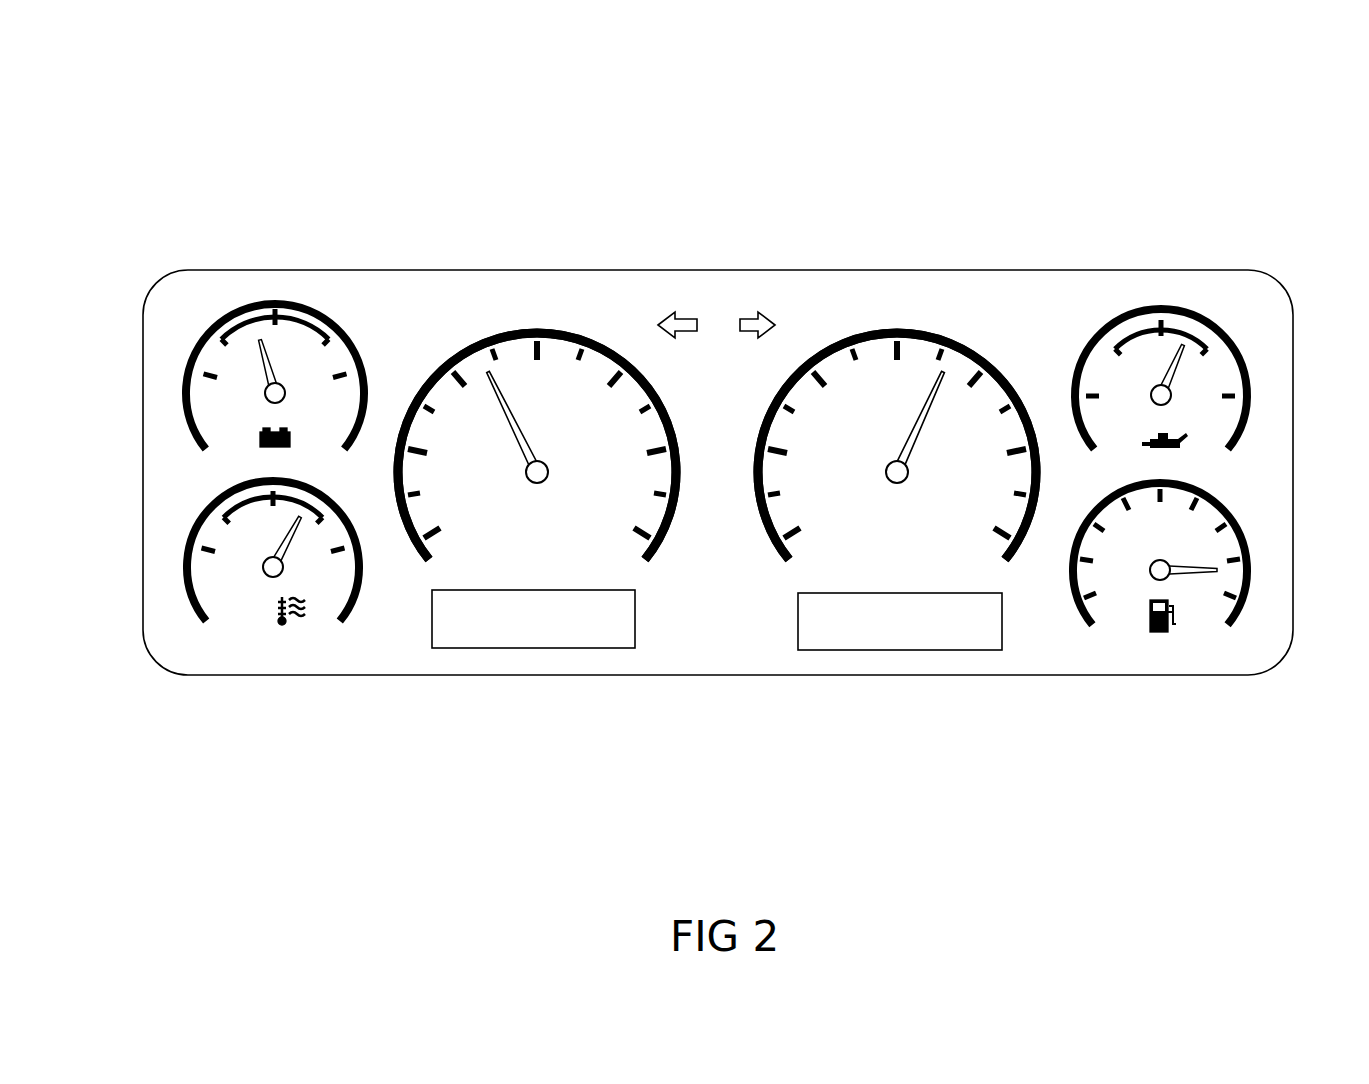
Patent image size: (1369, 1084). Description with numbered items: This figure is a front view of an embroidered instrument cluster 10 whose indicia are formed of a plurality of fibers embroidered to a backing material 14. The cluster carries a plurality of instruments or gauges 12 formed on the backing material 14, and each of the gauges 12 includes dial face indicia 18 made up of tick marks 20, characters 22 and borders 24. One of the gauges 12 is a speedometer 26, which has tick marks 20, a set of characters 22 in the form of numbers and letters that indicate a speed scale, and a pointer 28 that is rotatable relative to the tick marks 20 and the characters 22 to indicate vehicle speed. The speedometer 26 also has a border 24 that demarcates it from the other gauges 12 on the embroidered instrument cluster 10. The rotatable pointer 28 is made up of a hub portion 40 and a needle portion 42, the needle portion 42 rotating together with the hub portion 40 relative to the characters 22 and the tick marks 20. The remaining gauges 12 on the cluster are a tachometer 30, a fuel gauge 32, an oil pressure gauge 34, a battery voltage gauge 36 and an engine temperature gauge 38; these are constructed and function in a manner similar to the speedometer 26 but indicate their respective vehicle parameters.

The embroidered instrument cluster 10 is at (243, 188).
The gauge 12 is at (453, 295).
The backing material 14 is at (777, 304).
The dial face indicia 18 is at (448, 382).
The tick marks 20 is at (660, 500).
The characters 22 is at (462, 462).
The border 24 is at (677, 470).
The speedometer 26 is at (562, 297).
The pointer 28 is at (553, 467).
The tachometer 30 is at (993, 297).
The fuel gauge 32 is at (1202, 645).
The oil pressure gauge 34 is at (1253, 357).
The battery voltage gauge 36 is at (173, 402).
The engine temperature gauge 38 is at (173, 613).
The hub portion 40 is at (540, 484).
The needle portion 42 is at (512, 418).